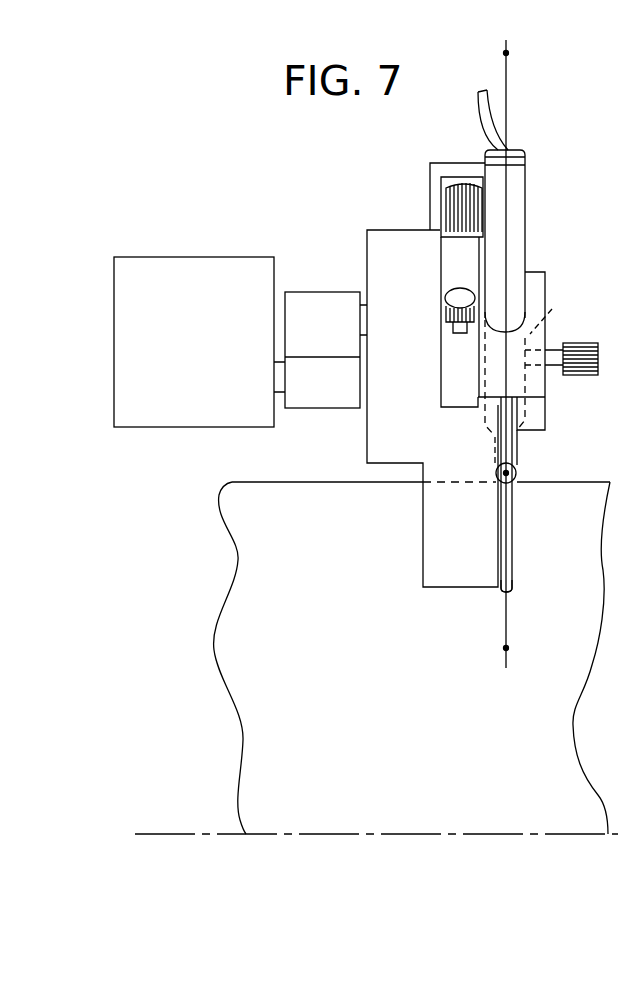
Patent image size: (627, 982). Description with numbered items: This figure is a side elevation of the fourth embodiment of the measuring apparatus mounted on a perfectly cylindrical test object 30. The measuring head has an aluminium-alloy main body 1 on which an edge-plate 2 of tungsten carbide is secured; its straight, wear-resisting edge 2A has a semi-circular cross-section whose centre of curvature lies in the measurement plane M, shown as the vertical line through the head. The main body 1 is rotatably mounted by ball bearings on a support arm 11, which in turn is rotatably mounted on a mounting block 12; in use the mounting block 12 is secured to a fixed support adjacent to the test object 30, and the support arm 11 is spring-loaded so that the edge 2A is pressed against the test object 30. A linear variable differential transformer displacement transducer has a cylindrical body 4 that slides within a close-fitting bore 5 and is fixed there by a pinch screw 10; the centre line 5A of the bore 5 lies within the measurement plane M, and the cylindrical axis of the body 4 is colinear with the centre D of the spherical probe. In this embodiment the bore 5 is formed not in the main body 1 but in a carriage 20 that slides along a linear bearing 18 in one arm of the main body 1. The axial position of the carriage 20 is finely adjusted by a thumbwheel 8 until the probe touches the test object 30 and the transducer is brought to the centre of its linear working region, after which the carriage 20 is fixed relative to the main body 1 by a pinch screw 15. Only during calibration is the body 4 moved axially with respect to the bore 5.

The main body 1 is at (387, 245).
The edge-plate 2 is at (512, 560).
The wear resisting edge 2A is at (502, 594).
The body 4 is at (518, 222).
The bore 5 is at (546, 325).
The centre line of the bore 5A is at (507, 282).
The thumbwheel 8 is at (460, 197).
The pinch screw 10 is at (585, 352).
The support arm 11 is at (327, 305).
The mounting block 12 is at (187, 277).
The pinch screw 15 is at (458, 295).
The linear bearing 18 is at (460, 255).
The carriage 20 is at (537, 380).
The test object 30 is at (317, 481).
The centre of the spherical probe D is at (508, 467).
The measurement plane M is at (506, 53).